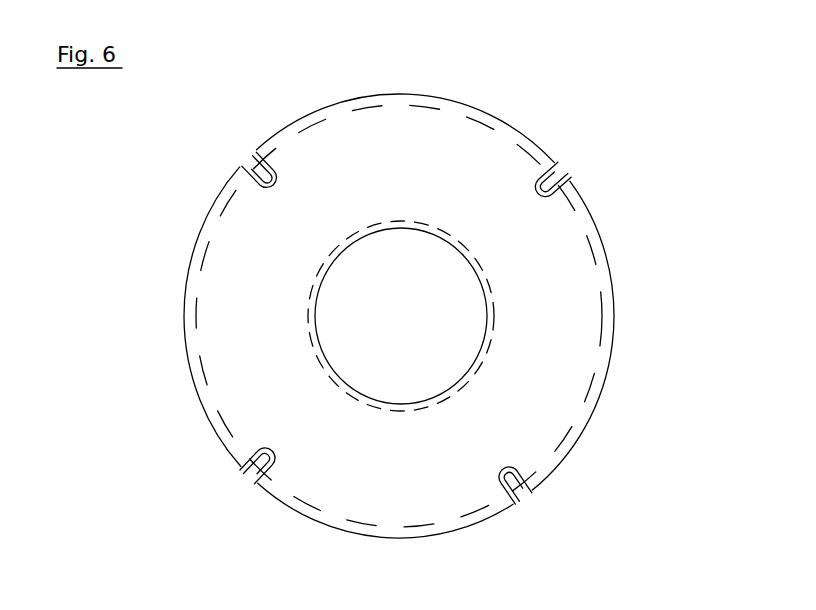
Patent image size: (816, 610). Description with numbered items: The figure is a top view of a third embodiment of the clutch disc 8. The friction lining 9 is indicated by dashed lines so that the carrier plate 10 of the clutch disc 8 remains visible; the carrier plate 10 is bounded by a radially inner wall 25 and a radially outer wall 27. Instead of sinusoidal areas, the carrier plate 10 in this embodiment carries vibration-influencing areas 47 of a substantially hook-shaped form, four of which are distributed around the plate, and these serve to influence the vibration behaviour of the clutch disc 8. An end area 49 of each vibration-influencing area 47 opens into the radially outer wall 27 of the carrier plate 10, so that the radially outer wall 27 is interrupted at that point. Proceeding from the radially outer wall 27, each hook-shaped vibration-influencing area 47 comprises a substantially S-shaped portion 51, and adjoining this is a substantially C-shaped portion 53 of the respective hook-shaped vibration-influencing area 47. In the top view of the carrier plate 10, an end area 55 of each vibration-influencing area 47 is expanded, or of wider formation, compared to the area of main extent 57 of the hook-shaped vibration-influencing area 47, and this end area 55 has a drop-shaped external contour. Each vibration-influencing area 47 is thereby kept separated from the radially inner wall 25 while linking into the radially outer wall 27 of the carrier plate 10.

The clutch disc 8 is at (638, 165).
The friction lining 9 is at (608, 357).
The carrier plate 10 is at (596, 310).
The radially inner wall 25 is at (400, 402).
The radially outer wall 27 is at (585, 428).
The vibration-influencing area 47 is at (263, 210).
The end area 49 is at (248, 153).
The S-shaped portion 51 is at (255, 177).
The C-shaped portion 53 is at (282, 183).
The end area 55 is at (270, 165).
The area of main extent 57 is at (270, 197).